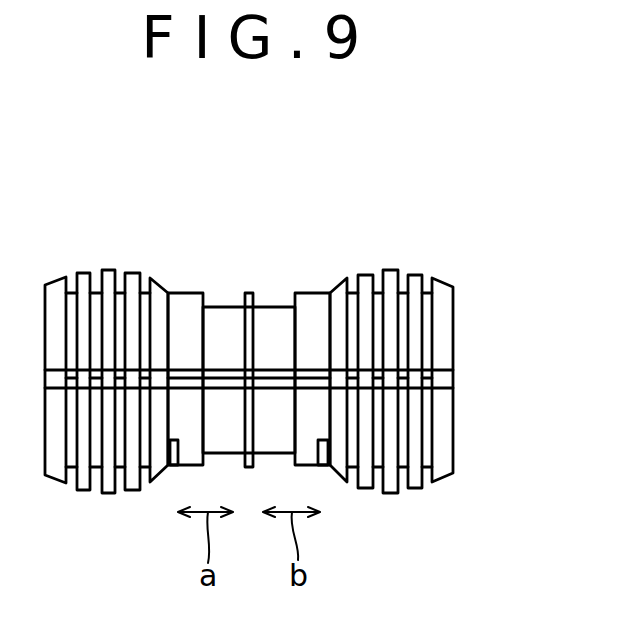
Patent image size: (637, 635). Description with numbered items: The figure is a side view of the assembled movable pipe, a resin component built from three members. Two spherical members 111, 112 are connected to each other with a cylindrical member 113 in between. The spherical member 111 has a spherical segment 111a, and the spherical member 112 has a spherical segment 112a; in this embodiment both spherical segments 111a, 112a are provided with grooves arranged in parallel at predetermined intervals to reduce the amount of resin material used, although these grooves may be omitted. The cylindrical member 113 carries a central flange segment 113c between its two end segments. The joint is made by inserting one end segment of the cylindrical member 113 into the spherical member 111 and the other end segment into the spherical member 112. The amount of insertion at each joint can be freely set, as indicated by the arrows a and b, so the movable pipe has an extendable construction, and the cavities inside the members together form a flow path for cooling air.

The spherical member 111 is at (106, 366).
The spherical segment 111a is at (108, 493).
The spherical member 112 is at (414, 366).
The spherical segment 112a is at (413, 492).
The cylindrical member 113 is at (249, 311).
The central flange segment 113c is at (250, 293).